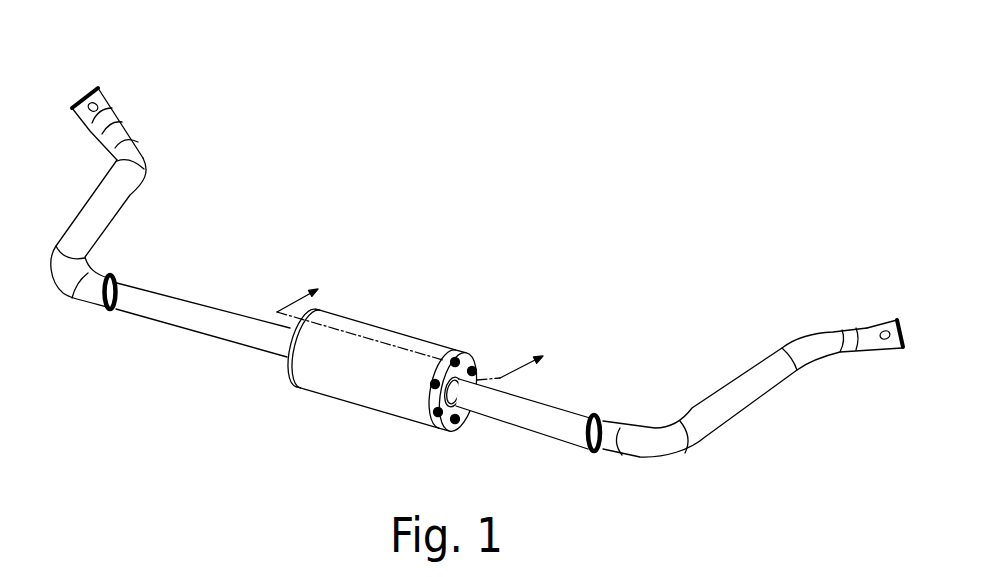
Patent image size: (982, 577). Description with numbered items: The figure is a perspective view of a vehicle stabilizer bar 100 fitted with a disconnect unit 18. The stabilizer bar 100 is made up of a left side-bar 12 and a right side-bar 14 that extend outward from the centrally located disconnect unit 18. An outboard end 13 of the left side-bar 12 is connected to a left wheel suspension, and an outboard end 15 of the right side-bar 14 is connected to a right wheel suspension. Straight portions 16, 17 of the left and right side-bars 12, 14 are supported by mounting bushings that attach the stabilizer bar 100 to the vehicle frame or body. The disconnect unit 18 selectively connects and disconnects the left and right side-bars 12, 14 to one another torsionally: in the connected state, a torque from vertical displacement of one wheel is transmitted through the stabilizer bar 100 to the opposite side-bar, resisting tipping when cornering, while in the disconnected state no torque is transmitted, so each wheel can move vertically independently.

The vehicle stabilizer bar 100 is at (577, 221).
The left side-bar 12 is at (190, 315).
The outboard end 13 is at (106, 96).
The right side-bar 14 is at (566, 413).
The outboard end 15 is at (880, 328).
The straight portion 16 is at (143, 291).
The straight portion 17 is at (540, 423).
The disconnect unit 18 is at (372, 392).